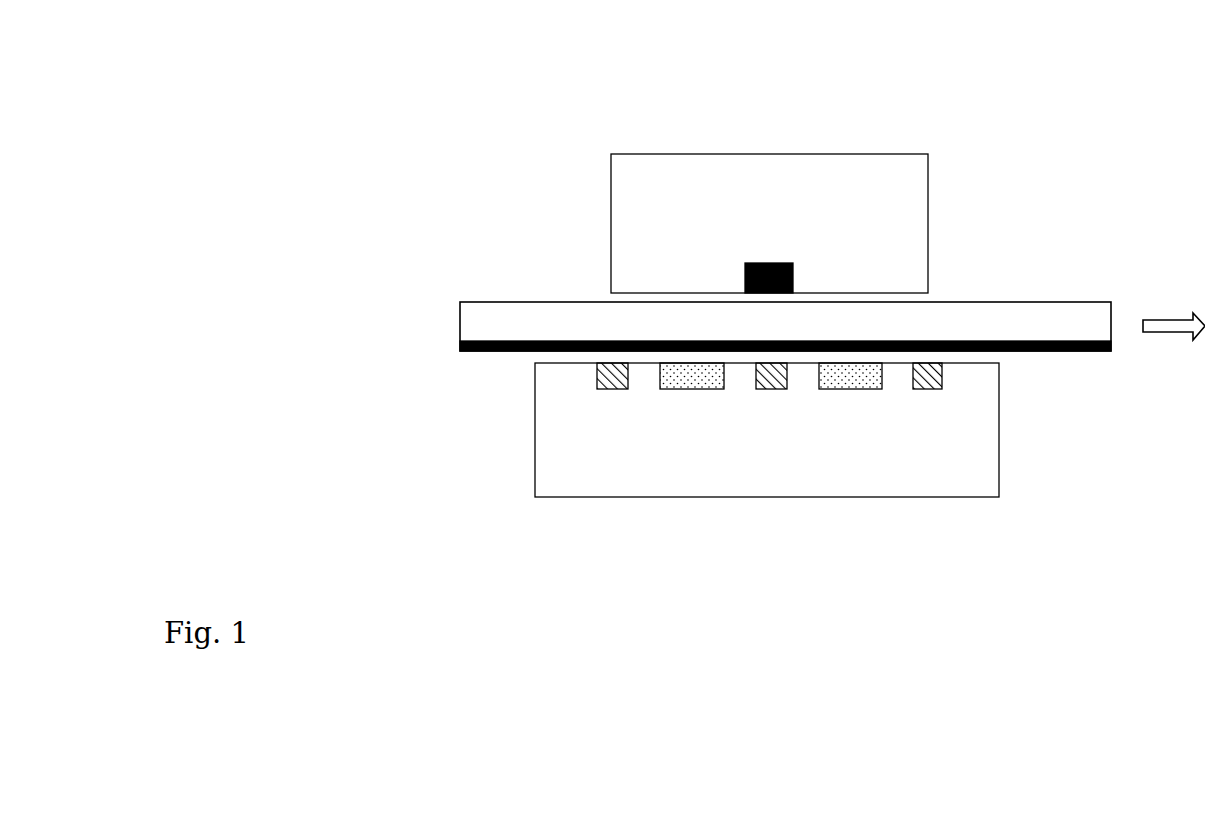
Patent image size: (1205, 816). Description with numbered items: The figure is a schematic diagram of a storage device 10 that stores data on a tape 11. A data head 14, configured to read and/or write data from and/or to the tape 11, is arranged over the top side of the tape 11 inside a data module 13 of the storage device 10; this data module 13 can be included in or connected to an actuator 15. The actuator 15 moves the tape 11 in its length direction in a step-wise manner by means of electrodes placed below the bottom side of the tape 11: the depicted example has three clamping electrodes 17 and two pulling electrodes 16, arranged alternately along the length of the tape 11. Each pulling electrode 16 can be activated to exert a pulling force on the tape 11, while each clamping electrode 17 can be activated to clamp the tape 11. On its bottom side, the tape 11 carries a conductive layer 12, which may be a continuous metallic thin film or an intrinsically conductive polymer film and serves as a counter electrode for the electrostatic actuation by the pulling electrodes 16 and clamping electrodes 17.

The storage device 10 is at (494, 89).
The tape 11 is at (447, 323).
The conductive layer 12 is at (487, 352).
The data module 13 is at (895, 156).
The data head 14 is at (770, 262).
The actuator 15 is at (999, 441).
The pulling electrode 16 is at (688, 390).
The clamping electrode 17 is at (613, 390).